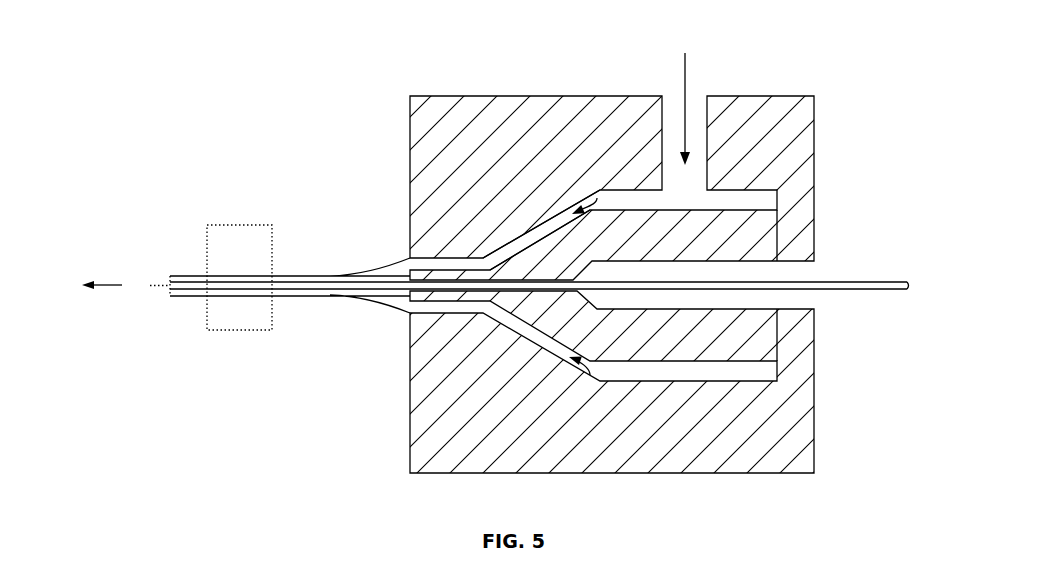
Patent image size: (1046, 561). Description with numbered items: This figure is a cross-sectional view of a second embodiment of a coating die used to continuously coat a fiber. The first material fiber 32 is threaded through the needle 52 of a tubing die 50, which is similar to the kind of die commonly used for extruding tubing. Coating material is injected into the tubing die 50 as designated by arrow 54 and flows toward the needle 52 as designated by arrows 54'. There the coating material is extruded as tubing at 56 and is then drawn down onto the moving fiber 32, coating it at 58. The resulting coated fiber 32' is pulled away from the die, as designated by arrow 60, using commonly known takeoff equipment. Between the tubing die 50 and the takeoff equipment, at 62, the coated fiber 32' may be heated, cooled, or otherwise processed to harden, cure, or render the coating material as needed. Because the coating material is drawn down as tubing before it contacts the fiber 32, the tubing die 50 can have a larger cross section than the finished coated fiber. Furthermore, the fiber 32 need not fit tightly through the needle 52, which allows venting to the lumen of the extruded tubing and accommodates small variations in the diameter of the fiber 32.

The first material fiber 32 is at (539, 239).
The coated fiber 32' is at (236, 342).
The tubing die 50 is at (581, 76).
The needle 52 is at (447, 268).
The arrow (injection of coating material) 54 is at (711, 98).
The arrows (flow of coating material) 54' is at (515, 277).
The extruded tubing location 56 is at (412, 263).
The draw-down coating location 58 is at (313, 277).
The arrow (pulling direction) 60 is at (122, 285).
The processing region 62 is at (216, 332).